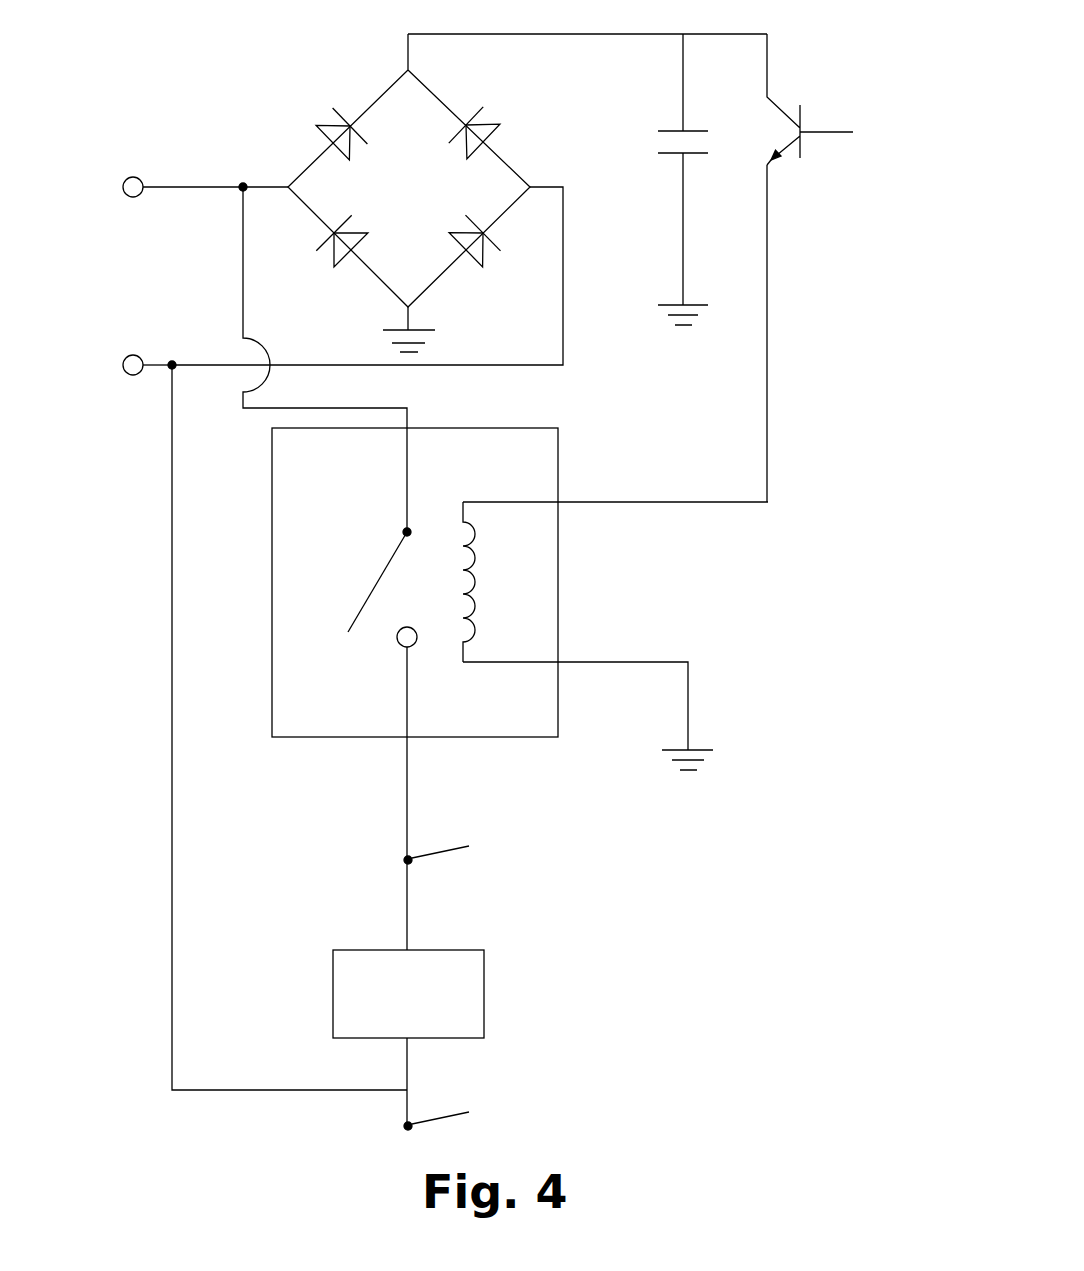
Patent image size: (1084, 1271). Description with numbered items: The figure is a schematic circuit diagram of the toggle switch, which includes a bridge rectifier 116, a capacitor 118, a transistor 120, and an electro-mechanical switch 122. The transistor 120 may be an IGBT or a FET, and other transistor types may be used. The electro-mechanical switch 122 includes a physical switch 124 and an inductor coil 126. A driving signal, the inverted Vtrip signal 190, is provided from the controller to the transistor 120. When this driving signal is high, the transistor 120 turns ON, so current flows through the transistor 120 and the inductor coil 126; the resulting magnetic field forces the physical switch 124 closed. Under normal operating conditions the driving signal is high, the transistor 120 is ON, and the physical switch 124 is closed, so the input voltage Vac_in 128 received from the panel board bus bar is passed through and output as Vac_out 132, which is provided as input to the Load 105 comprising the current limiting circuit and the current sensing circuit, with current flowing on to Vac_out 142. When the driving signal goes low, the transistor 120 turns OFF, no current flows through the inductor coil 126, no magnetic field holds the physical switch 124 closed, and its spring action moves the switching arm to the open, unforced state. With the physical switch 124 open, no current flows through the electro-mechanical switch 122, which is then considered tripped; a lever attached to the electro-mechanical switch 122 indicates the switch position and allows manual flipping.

The Load 105 is at (484, 973).
The bridge rectifier 116 is at (310, 92).
The capacitor 118 is at (638, 123).
The transistor 120 is at (788, 78).
The electro-mechanical switch 122 is at (272, 490).
The physical switch 124 is at (360, 565).
The inductor coil 126 is at (490, 555).
The input voltage Vac_in 128 is at (113, 268).
The Vac_out 132 is at (588, 830).
The Vac_out 142 is at (588, 1098).
The inverted Vtrip signal 190 is at (905, 115).